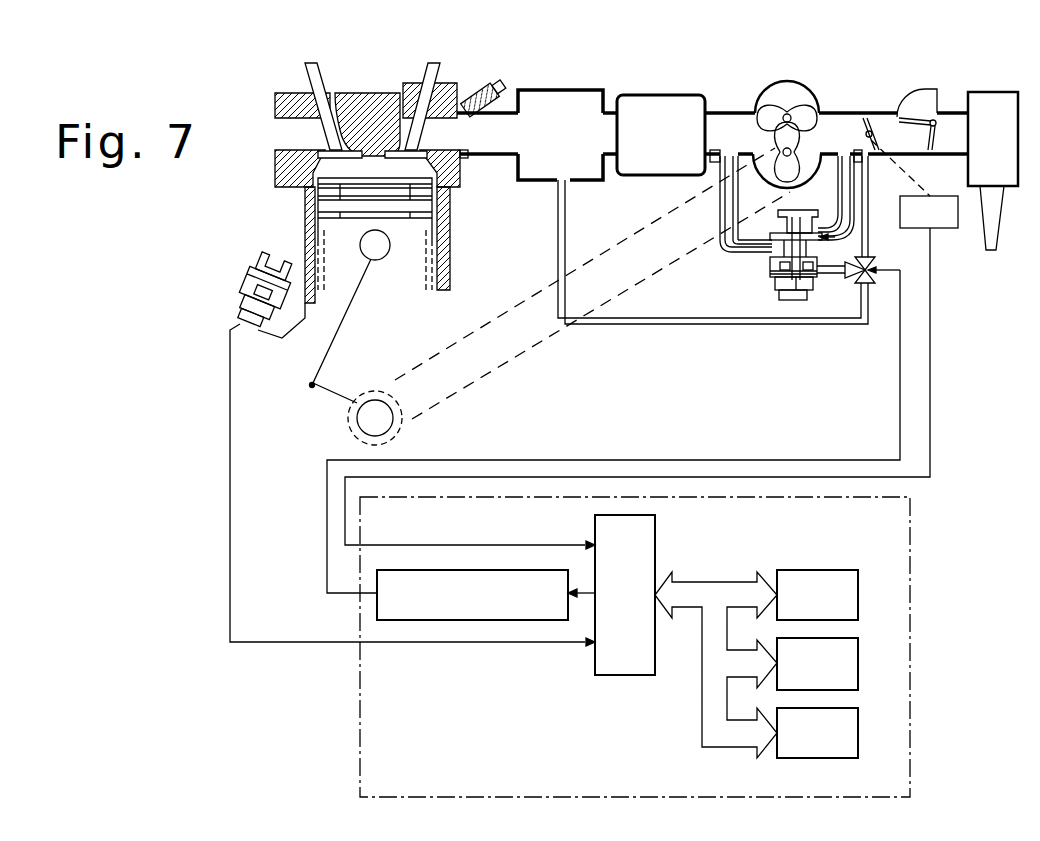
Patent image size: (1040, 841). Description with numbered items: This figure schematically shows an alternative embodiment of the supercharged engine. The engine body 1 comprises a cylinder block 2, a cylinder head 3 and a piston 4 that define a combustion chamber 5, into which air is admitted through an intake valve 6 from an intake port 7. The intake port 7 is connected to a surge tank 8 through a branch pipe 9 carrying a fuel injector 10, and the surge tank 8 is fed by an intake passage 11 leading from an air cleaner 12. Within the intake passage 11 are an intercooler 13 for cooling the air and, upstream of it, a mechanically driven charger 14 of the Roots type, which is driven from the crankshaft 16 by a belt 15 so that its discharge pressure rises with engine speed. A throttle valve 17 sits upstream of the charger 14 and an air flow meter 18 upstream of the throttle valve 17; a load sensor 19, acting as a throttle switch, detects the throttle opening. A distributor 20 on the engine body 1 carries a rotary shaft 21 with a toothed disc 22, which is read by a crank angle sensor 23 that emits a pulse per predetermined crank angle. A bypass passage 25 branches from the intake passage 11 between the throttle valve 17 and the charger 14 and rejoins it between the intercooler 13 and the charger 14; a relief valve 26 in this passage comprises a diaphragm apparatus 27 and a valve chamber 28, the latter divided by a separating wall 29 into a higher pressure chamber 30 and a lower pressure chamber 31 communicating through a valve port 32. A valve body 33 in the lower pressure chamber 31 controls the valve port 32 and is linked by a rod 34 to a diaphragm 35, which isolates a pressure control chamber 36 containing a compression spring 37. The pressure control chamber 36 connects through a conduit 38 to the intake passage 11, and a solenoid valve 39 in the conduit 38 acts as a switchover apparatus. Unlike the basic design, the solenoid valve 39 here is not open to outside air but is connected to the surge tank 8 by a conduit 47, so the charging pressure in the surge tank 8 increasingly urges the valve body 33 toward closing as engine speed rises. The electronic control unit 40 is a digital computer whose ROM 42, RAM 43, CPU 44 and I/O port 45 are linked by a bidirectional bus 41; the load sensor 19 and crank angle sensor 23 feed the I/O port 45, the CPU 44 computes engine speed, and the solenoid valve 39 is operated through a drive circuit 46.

The engine body 1 is at (384, 246).
The cylinder block 2 is at (452, 243).
The cylinder head 3 is at (393, 100).
The piston 4 is at (352, 253).
The combustion chamber 5 is at (340, 183).
The intake valve 6 is at (368, 100).
The intake port 7 is at (443, 110).
The surge tank 8 is at (565, 90).
The branch pipe 9 is at (488, 156).
The fuel injector 10 is at (485, 86).
The intake passage 11 is at (725, 111).
The air cleaner 12 is at (993, 92).
The intercooler 13 is at (660, 97).
The mechanically driven charger 14 is at (787, 82).
The belt 15 is at (505, 362).
The crankshaft 16 is at (360, 424).
The throttle valve 17 is at (862, 116).
The air flow meter 18 is at (925, 88).
The load sensor 19 is at (945, 228).
The distributor 20 is at (390, 436).
The rotary shaft 21 is at (265, 325).
The disc 22 is at (273, 266).
The crank angle sensor 23 is at (251, 317).
The bypass passage 25 is at (722, 193).
The relief valve 26 is at (801, 267).
The diaphragm apparatus 27 is at (765, 296).
The valve chamber 28 is at (847, 222).
The separating wall 29 is at (770, 246).
The higher pressure chamber 30 is at (803, 248).
The lower pressure chamber 31 is at (805, 212).
The valve port 32 is at (838, 237).
The valve body 33 is at (790, 212).
The rod 34 is at (787, 292).
The diaphragm 35 is at (800, 292).
The pressure control chamber 36 is at (817, 287).
The compression spring 37 is at (770, 272).
The conduit 38 is at (868, 252).
The solenoid valve 39 is at (868, 280).
The electronic control unit 40 is at (648, 533).
The bidirectional bus 41 is at (702, 702).
The ROM 42 is at (860, 572).
The RAM 43 is at (860, 640).
The CPU 44 is at (860, 710).
The I/O port 45 is at (657, 530).
The drive circuit 46 is at (538, 570).
The conduit 47 is at (648, 326).